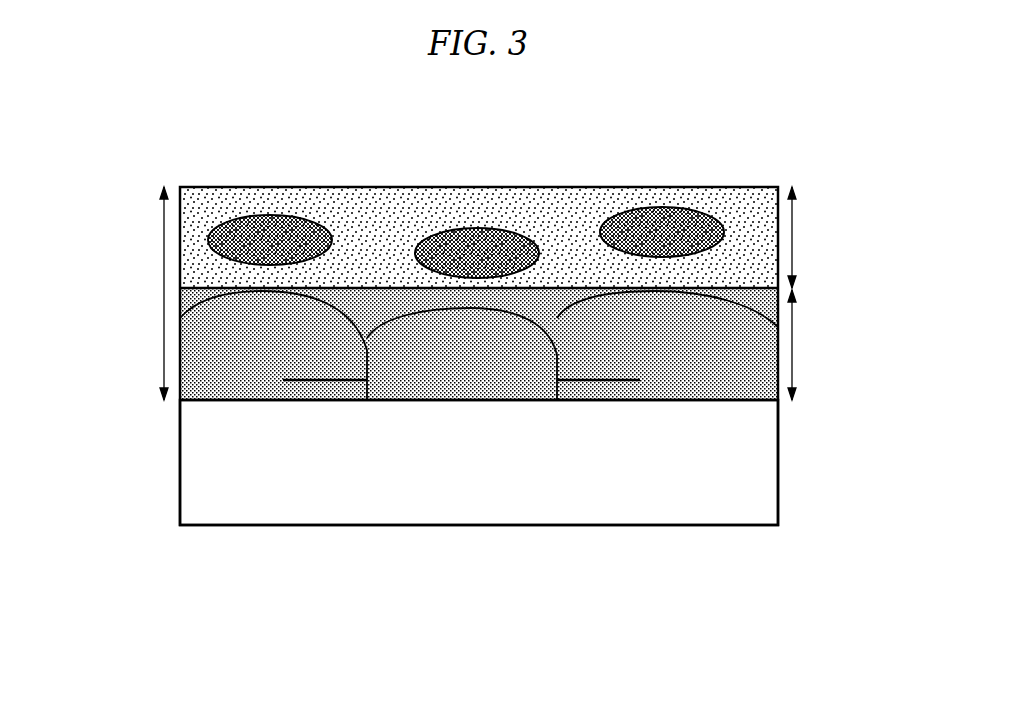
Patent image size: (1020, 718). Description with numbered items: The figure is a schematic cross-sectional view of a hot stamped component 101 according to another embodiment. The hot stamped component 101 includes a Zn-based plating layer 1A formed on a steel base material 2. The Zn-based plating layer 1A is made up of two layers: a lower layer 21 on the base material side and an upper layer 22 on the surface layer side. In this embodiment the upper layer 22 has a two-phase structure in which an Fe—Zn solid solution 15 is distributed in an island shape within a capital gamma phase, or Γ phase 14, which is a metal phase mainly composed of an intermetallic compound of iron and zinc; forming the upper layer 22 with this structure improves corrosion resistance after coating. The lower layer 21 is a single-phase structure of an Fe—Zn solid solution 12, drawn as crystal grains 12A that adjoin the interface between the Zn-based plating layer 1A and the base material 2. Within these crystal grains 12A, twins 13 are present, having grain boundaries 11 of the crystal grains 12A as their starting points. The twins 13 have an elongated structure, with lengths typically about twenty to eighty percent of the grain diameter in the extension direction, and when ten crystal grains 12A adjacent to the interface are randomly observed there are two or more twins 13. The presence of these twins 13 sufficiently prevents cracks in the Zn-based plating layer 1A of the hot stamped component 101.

The hot stamped component 101 is at (735, 176).
The Zn-based plating layer 1A is at (157, 280).
The base material 2 is at (477, 502).
The grain boundaries 11 is at (573, 313).
The Fe—Zn solid solution 12 is at (212, 362).
The crystal grains 12A is at (238, 380).
The twins 13 is at (325, 380).
The Γ phase 14 is at (383, 195).
The Fe—Zn solid solution 15 is at (662, 215).
The lower layer 21 is at (783, 343).
The upper layer 22 is at (783, 231).